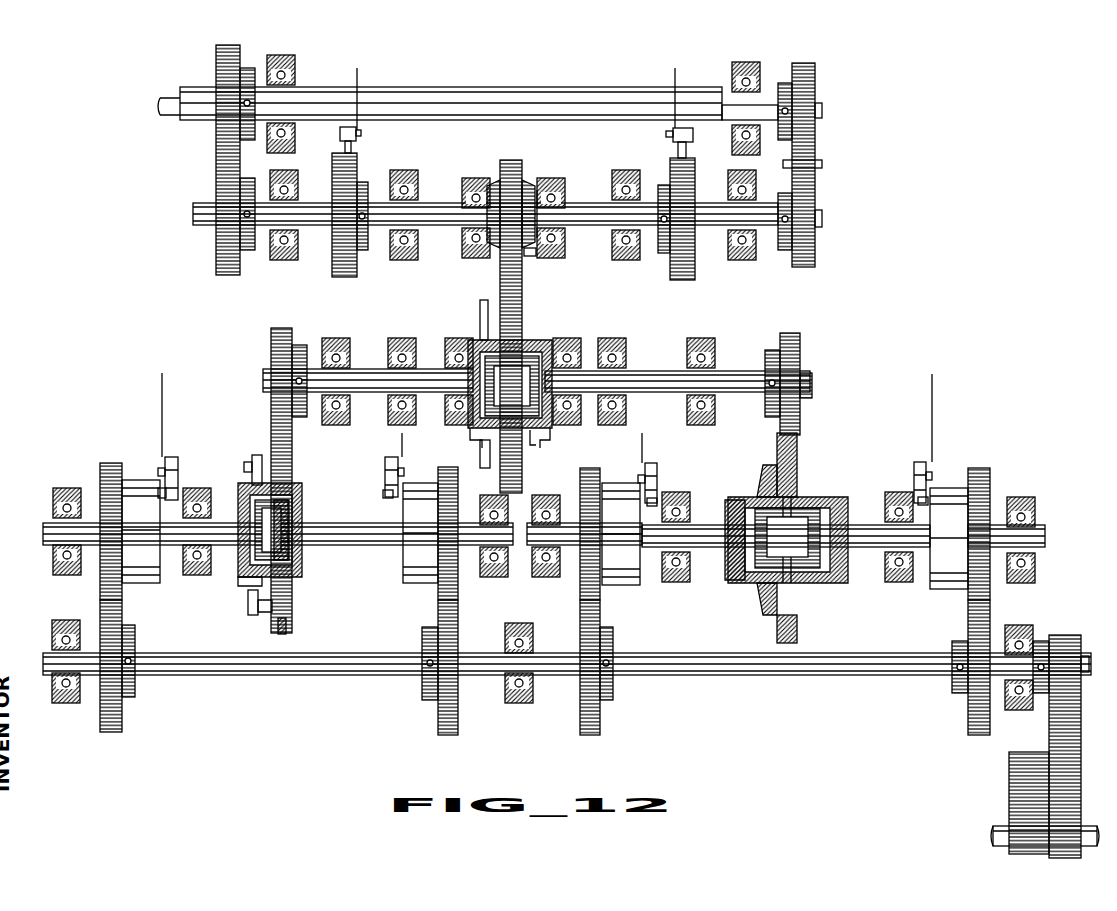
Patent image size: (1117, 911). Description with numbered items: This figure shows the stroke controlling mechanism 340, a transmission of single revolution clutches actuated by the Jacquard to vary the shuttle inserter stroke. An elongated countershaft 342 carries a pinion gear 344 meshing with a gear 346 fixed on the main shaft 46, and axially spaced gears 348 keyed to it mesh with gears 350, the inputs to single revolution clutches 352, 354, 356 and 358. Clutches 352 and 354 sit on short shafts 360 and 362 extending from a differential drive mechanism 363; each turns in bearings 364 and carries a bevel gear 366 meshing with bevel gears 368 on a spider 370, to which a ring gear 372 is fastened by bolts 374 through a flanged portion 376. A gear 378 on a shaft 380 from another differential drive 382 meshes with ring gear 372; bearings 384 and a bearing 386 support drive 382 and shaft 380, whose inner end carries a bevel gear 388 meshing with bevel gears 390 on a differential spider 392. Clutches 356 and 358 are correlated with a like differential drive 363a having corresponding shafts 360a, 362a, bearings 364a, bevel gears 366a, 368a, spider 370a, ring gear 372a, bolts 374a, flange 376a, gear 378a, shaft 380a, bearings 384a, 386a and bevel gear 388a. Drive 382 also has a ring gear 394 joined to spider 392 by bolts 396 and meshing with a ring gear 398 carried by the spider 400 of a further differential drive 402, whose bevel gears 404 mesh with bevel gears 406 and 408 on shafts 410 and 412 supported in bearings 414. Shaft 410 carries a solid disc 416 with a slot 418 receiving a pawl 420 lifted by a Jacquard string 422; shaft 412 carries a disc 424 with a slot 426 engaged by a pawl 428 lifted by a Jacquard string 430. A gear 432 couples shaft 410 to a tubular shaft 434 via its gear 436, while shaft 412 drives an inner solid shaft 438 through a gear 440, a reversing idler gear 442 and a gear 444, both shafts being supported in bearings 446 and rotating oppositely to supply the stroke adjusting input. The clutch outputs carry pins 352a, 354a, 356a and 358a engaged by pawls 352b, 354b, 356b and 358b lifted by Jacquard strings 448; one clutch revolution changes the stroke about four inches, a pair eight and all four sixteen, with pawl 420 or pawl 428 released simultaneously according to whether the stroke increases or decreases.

The stroke controlling mechanism 340 is at (952, 260).
The countershaft 342 is at (853, 676).
The pinion gear 344 is at (1089, 635).
The gear 346 is at (1048, 746).
The axially spaced gears 348 is at (120, 730).
The gears 350 is at (102, 568).
The single revolution clutch 352 is at (946, 489).
The pin 352a is at (922, 497).
The pawl 352b is at (920, 462).
The single revolution clutch 354 is at (642, 590).
The pin 354a is at (653, 498).
The pawl 354b is at (650, 463).
The single revolution clutch 356 is at (405, 583).
The pin 356a is at (387, 490).
The pawl 356b is at (393, 458).
The single revolution clutch 358 is at (137, 585).
The pin 358a is at (160, 488).
The pawl 358b is at (170, 457).
The short shaft 360 is at (1043, 527).
The short shaft 360a is at (475, 546).
The short shaft 362 is at (707, 552).
The short shaft 362a is at (43, 526).
The differential drive mechanism 363 is at (817, 482).
The differential drive mechanism 363a is at (292, 577).
The bearings 364 is at (558, 577).
The bearings 364a is at (93, 474).
The bevel gears 366 is at (745, 583).
The bevel gears 366a is at (245, 577).
The bevel gears 368 is at (815, 492).
The bevel gears 368a is at (263, 492).
The spider 370 is at (745, 481).
The spider 370a is at (263, 613).
The ring gear 372 is at (787, 643).
The ring gear 372a is at (283, 640).
The bolts 374 is at (757, 468).
The bolts 374a is at (248, 462).
The flanged portion 376 is at (770, 618).
The flanged portion 376a is at (258, 455).
The gear 378 is at (801, 335).
The gear 378a is at (271, 317).
The shaft 380 is at (737, 371).
The shaft 380a is at (427, 369).
The differential drive 382 is at (540, 333).
The bearings 384 is at (692, 360).
The bearings 384a is at (392, 352).
The bearing 386 is at (612, 343).
The bearing 386a is at (460, 338).
The bevel gear 388 is at (547, 424).
The bevel gear 388a is at (477, 421).
The bevel gears 390 is at (540, 345).
The differential spider 392 is at (537, 428).
The ring gear 394 is at (525, 291).
The bolts 396 is at (480, 455).
The ring gear 398 is at (513, 160).
The spider 400 is at (535, 256).
The differential drive 402 is at (530, 178).
The bevel gears 404 is at (497, 180).
The bevel gear 406 is at (488, 195).
The bevel gear 408 is at (547, 192).
The shaft 410 is at (195, 206).
The shaft 412 is at (822, 219).
The bearings 414 is at (272, 245).
The solid disc 416 is at (332, 181).
The transverse slot 418 is at (357, 153).
The pawl 420 is at (358, 134).
The Jacquard string 422 is at (357, 68).
The solid disc 424 is at (694, 262).
The slot 426 is at (670, 160).
The pawl 428 is at (672, 136).
The Jacquard string 430 is at (675, 68).
The gear 432 is at (216, 243).
The tubular shaft 434 is at (440, 87).
The gear 436 is at (216, 52).
The solid shaft 438 is at (770, 105).
The gear 440 is at (815, 189).
The reversing idler gear 442 is at (820, 162).
The gear 444 is at (815, 63).
The bearings 446 is at (297, 75).
The Jacquard strings 448 is at (162, 373).
The main shaft 46 is at (1003, 826).